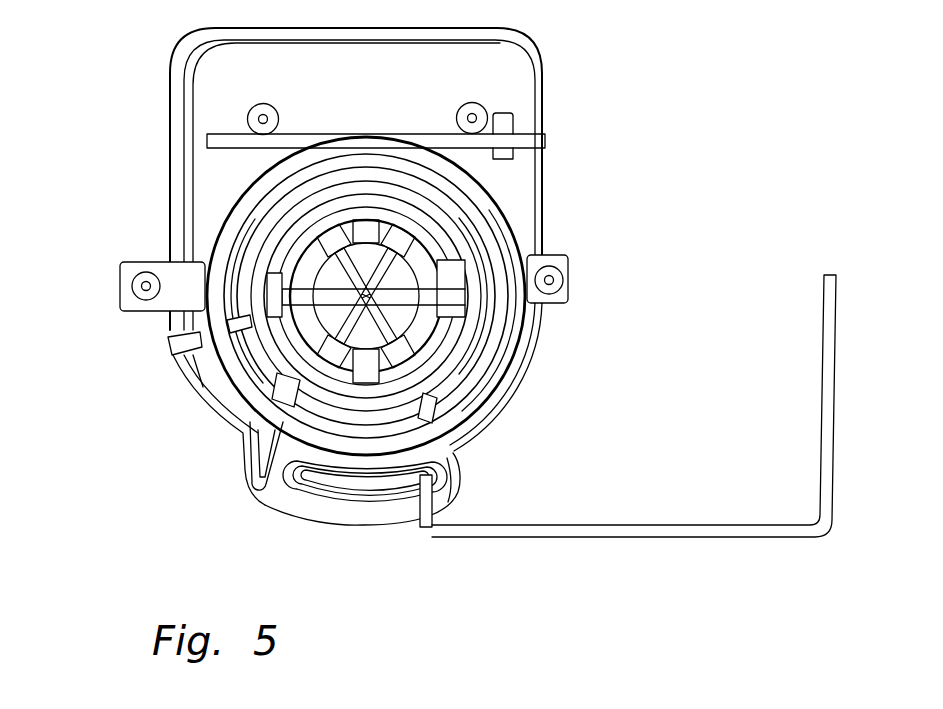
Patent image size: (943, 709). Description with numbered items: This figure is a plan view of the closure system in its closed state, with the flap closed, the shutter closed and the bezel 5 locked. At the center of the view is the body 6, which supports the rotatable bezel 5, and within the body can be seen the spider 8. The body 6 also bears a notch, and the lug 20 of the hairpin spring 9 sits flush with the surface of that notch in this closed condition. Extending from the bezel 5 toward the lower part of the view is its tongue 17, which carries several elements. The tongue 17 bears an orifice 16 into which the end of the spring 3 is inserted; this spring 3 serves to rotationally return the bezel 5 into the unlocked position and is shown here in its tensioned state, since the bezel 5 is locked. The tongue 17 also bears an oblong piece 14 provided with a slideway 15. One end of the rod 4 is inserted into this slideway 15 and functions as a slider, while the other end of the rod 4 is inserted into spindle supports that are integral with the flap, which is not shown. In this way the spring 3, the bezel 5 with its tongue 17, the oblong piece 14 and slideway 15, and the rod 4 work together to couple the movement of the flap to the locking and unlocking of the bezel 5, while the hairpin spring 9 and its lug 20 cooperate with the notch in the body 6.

The spring 3 is at (253, 197).
The rod 4 is at (558, 530).
The bezel 5 is at (472, 308).
The body 6 is at (508, 66).
The spider 8 is at (404, 294).
The hairpin spring 9 is at (430, 360).
The oblong piece 14 is at (283, 488).
The slideway 15 is at (333, 490).
The orifice 16 is at (243, 481).
The tongue 17 is at (387, 513).
The lug 20 is at (443, 403).